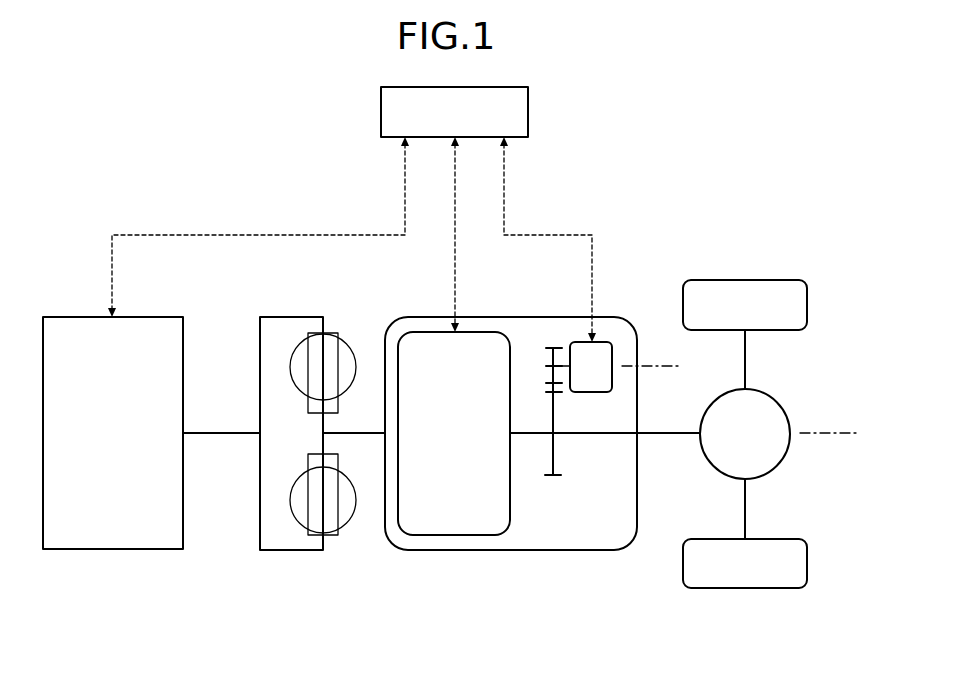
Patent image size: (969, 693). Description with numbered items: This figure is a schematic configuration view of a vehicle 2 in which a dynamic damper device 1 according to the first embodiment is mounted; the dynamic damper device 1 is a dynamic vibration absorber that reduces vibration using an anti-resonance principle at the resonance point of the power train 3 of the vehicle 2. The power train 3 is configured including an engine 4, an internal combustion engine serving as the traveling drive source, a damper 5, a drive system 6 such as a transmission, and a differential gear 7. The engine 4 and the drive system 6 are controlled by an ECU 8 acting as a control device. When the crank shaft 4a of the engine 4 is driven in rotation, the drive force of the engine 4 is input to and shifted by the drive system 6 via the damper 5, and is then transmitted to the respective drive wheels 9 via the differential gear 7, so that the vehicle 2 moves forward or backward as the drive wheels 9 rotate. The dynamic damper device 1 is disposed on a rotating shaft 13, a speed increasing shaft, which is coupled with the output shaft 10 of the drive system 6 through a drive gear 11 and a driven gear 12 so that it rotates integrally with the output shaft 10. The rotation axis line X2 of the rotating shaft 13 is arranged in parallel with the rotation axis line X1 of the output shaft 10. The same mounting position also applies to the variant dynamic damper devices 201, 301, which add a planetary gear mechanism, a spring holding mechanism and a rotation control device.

The dynamic damper device 1 is at (640, 317).
The dynamic damper device 201 is at (640, 317).
The dynamic damper device 301 is at (603, 340).
The vehicle 2 is at (597, 201).
The power train 3 is at (231, 291).
The engine 4 is at (151, 307).
The crank shaft 4a is at (221, 432).
The damper 5 is at (302, 307).
The drive system 6 is at (481, 324).
The differential gear 7 is at (773, 394).
The ECU 8 is at (529, 112).
The drive wheels 9 is at (746, 280).
The output shaft 10 is at (522, 432).
The drive gear 11 is at (555, 452).
The driven gear 12 is at (552, 347).
The rotating shaft 13 is at (563, 365).
The rotation axis line X1 is at (840, 429).
The rotation axis line X2 is at (661, 361).